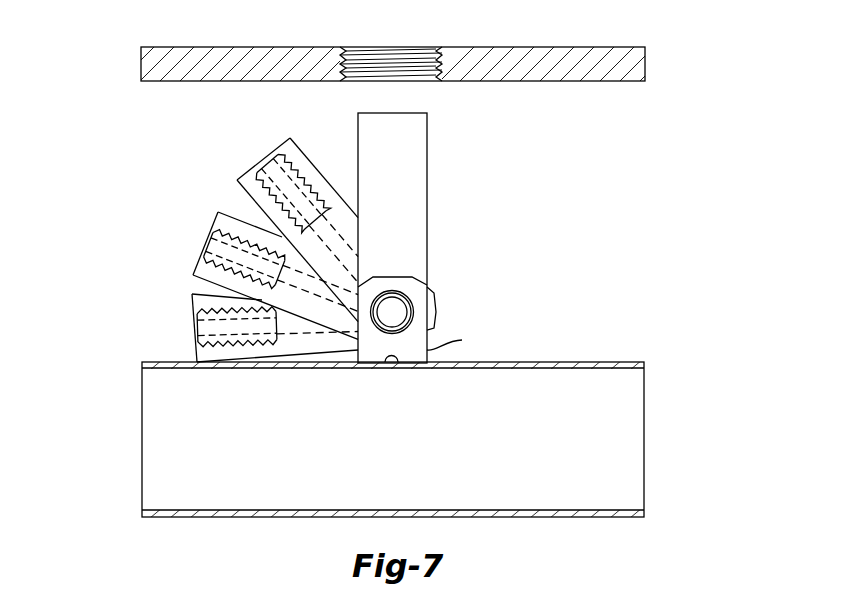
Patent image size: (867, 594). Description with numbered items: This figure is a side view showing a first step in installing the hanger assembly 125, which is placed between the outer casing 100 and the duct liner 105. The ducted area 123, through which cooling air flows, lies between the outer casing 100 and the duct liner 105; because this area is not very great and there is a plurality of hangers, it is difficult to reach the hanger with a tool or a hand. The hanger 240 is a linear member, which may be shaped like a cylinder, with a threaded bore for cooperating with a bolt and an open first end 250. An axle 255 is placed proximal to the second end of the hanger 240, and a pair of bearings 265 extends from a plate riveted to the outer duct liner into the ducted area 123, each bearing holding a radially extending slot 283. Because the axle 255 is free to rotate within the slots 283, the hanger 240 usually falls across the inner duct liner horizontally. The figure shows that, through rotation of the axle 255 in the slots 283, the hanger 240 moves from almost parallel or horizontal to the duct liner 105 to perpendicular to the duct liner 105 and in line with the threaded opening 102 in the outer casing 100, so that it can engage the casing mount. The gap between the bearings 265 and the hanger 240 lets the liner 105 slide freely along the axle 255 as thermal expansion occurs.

The outer casing 100 is at (180, 47).
The opening 102 is at (341, 54).
The duct liner 105 is at (127, 383).
The ducted area 123 is at (536, 222).
The hanger assembly 125 is at (193, 183).
The hanger 240 is at (427, 150).
The first end 250 is at (380, 113).
The axle 255 is at (392, 312).
The bearings 265 is at (461, 344).
The slot 283 is at (392, 290).